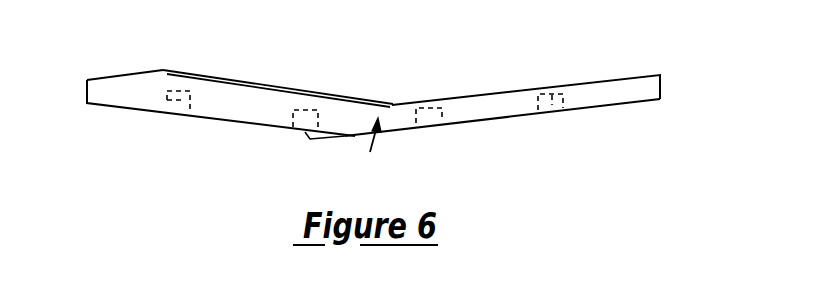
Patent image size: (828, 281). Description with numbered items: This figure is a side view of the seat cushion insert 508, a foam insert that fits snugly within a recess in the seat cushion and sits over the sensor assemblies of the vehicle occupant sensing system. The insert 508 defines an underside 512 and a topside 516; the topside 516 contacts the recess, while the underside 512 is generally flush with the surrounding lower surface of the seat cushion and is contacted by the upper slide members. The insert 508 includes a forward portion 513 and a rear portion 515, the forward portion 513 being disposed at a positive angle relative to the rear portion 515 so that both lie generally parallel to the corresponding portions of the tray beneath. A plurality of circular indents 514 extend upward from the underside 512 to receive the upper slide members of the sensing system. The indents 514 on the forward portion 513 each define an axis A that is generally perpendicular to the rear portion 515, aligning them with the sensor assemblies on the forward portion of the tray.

The seat cushion insert 508 is at (370, 152).
The underside 512 is at (462, 124).
The forward portion 513 is at (245, 108).
The indent 514 is at (180, 114).
The rear portion 515 is at (508, 107).
The topside 516 is at (362, 104).
The axis A is at (311, 138).